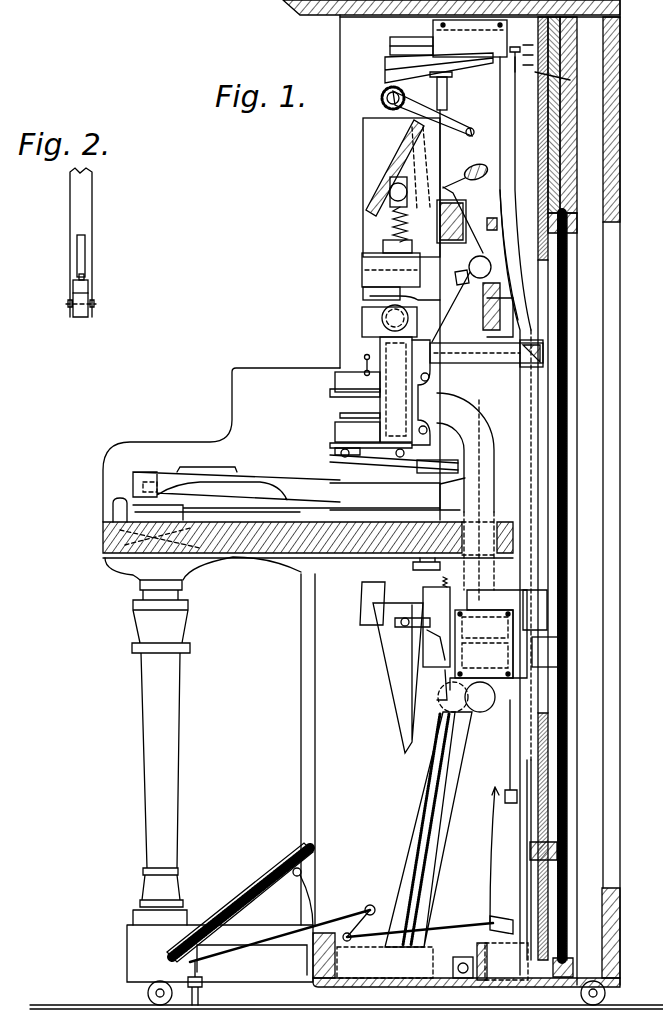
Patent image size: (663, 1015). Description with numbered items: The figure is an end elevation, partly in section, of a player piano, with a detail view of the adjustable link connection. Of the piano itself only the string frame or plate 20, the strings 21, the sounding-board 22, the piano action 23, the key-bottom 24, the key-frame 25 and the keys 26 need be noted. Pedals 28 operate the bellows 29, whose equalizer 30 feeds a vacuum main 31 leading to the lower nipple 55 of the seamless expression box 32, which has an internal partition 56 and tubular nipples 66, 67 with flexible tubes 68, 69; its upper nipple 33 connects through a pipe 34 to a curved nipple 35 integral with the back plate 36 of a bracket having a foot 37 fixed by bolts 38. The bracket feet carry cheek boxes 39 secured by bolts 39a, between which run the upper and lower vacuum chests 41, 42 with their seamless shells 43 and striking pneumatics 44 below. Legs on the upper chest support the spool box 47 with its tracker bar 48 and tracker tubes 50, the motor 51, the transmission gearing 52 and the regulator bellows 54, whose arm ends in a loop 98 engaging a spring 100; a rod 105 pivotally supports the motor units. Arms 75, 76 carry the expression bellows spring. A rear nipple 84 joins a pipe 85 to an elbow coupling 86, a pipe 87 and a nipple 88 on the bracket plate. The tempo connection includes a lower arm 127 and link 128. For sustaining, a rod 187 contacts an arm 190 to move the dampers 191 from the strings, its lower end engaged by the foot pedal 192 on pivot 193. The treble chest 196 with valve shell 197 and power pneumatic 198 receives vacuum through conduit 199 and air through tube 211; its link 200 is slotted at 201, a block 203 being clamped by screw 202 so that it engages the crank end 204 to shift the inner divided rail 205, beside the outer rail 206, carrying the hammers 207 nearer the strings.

In FIG. 1, the string frame or plate 20 is at (578, 143).
In FIG. 1, the strings 21 is at (548, 147).
In FIG. 1, the sounding-board 22 is at (568, 797).
In FIG. 1, the piano action 23 is at (382, 319).
In FIG. 1, the key-bottom 24 is at (242, 548).
In FIG. 1, the key-frame 25 is at (266, 522).
In FIG. 1, the keys 26 is at (155, 478).
In FIG. 1, the pedals 28 is at (247, 893).
In FIG. 1, the bellows 29 is at (405, 837).
In FIG. 1, the equalizer 30 is at (395, 663).
In FIG. 1, the wind way or vacuum main 31 is at (487, 705).
In FIG. 1, the expression box 32 is at (467, 677).
In FIG. 1, the upper nipple 33 is at (487, 600).
In FIG. 1, the pipe 34 is at (440, 468).
In FIG. 1, the curved pipe or nipple 35 is at (480, 440).
In FIG. 1, the back plate 36 is at (380, 403).
In FIG. 1, the foot 37 is at (368, 450).
In FIG. 1, the screws or bolts 38 is at (341, 455).
In FIG. 1, the cheek boxes 39 is at (364, 357).
In FIG. 1, the bolts 39a is at (300, 355).
In FIG. 1, the upper pneumatic vacuum chest 41 is at (336, 393).
In FIG. 1, the lower pneumatic vacuum chest 42 is at (340, 416).
In FIG. 1, the striking or power pneumatic seamless shells 43 is at (336, 377).
In FIG. 1, the striking pneumatics 44 is at (380, 397).
In FIG. 1, the tracker box or spool box 47 is at (365, 157).
In FIG. 1, the tracker bar 48 is at (383, 192).
In FIG. 1, the tracker tubes 50 is at (469, 267).
In FIG. 1, the motor 51 is at (368, 197).
In FIG. 1, the transmission gearing 52 is at (385, 105).
In FIG. 1, the automatic motor regulator bellows 54 is at (362, 260).
In FIG. 1, the lower nipple 55 is at (509, 745).
In FIG. 1, the partition 56 is at (484, 644).
In FIG. 1, the tubular nipple 66 is at (440, 637).
In FIG. 1, the tubular nipple 67 is at (450, 658).
In FIG. 1, the flexible tube 68 is at (423, 589).
In FIG. 1, the flexible tube 69 is at (445, 670).
In FIG. 1, the arm 75 is at (363, 602).
In FIG. 1, the arm 76 is at (417, 630).
In FIG. 1, the rear nipple 84 is at (547, 650).
In FIG. 1, the pipe 85 is at (540, 513).
In FIG. 1, the elbow coupling 86 is at (543, 358).
In FIG. 1, the pipe 87 is at (537, 347).
In FIG. 1, the nipple 88 is at (515, 351).
In FIG. 1, the loop 98 is at (383, 244).
In FIG. 1, the spring 100 is at (393, 228).
In FIG. 1, the rod or bolt 105 is at (363, 284).
In FIG. 1, the lower arm 127 is at (464, 560).
In FIG. 1, the link 128 is at (410, 566).
In FIG. 1, the vertically movable rod 187 is at (519, 319).
In FIG. 1, the arm 190 is at (520, 297).
In FIG. 1, the dampers 191 is at (565, 230).
In FIG. 1, the foot pedal 192 is at (270, 973).
In FIG. 1, the pivot 193 is at (463, 962).
In FIG. 1, the chest 196 is at (470, 38).
In FIG. 1, the valve shell 197 is at (413, 38).
In FIG. 1, the power pneumatic 198 is at (385, 70).
In FIG. 1, the vacuum conduit 199 is at (500, 117).
In FIG. 1, the link 200 is at (447, 93).
In FIG. 2, the link 200 is at (92, 215).
In FIG. 2, the slot 201 is at (84, 262).
In FIG. 2, the clamp screw 202 is at (70, 305).
In FIG. 2, the block 203 is at (88, 291).
In FIG. 2, the crank end 204 is at (86, 278).
In FIG. 1, the inner divided rail 205 is at (458, 218).
In FIG. 1, the outer divided rail 206 is at (453, 191).
In FIG. 1, the hammers 207 is at (476, 167).
In FIG. 1, the tube 211 is at (520, 62).